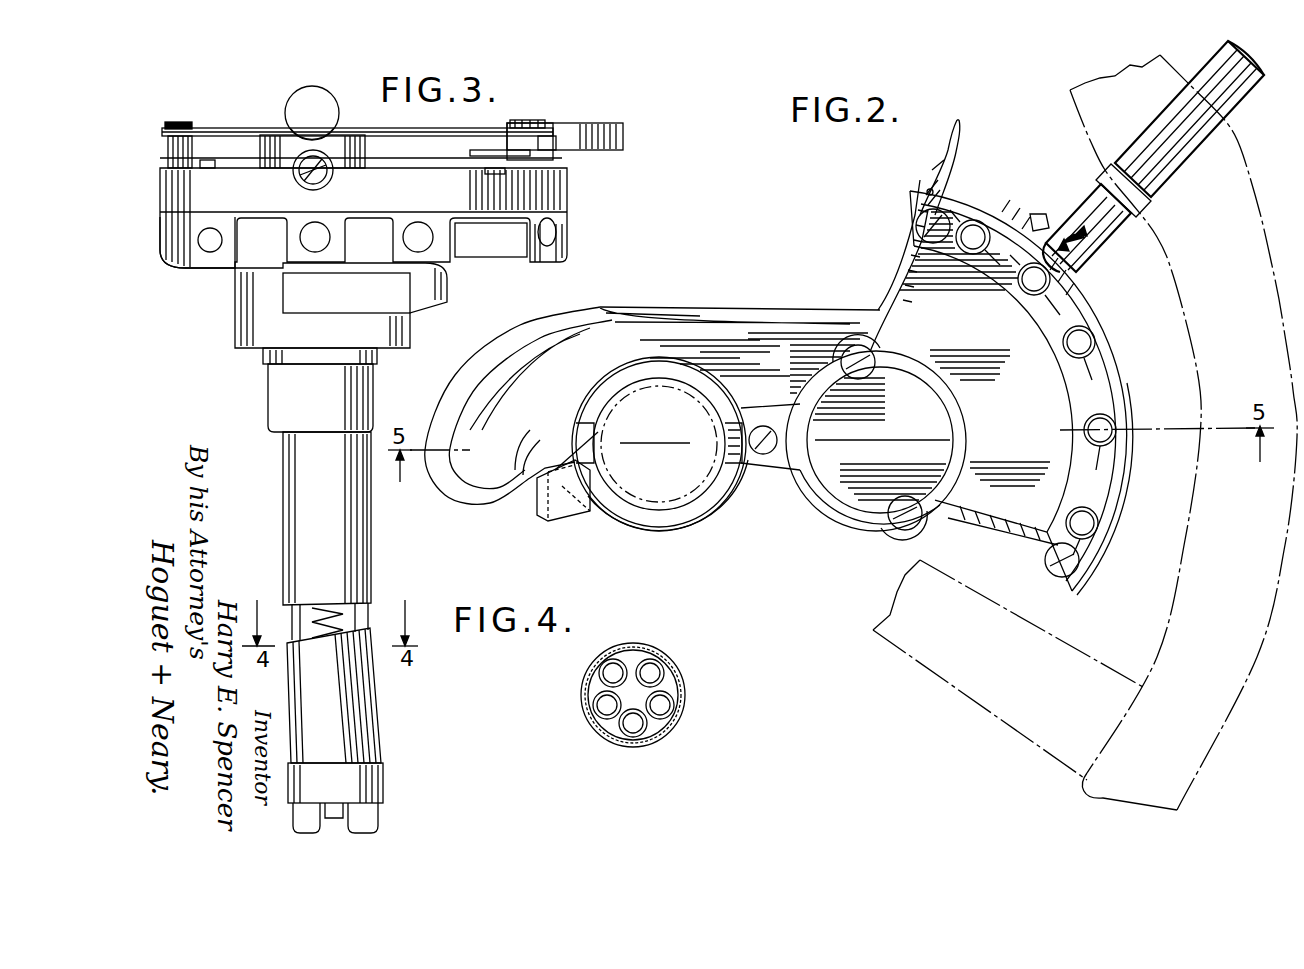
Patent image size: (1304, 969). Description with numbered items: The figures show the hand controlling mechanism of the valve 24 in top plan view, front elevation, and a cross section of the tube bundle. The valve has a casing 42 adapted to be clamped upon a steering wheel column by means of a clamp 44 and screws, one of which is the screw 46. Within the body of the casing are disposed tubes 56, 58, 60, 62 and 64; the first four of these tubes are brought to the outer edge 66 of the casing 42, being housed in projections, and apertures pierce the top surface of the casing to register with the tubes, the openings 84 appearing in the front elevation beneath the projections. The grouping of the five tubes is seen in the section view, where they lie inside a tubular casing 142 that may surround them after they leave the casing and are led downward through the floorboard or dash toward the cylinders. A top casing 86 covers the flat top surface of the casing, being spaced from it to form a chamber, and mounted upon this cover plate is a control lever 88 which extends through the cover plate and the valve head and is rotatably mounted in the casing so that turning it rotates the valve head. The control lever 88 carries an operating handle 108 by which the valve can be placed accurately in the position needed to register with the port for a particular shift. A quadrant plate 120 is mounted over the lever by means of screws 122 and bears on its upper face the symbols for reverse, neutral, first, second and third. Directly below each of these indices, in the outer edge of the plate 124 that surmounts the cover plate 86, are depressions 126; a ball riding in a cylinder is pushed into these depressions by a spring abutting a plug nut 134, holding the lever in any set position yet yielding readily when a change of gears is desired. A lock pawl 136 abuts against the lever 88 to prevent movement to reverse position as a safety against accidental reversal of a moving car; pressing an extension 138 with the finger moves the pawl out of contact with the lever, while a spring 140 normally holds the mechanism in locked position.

In FIG. 3, the valve 24 is at (382, 218).
In FIG. 3, the casing 42 is at (447, 274).
In FIG. 2, the casing 42 is at (712, 322).
In FIG. 2, the clamp 44 is at (690, 514).
In FIG. 2, the screw 46 is at (568, 514).
In FIG. 4, the tube 56 is at (606, 708).
In FIG. 4, the tube 58 is at (632, 726).
In FIG. 4, the tube 60 is at (611, 664).
In FIG. 4, the tube 62 is at (664, 712).
In FIG. 4, the tube 64 is at (654, 667).
In FIG. 3, the outer edge 66 is at (569, 213).
In FIG. 3, the holes 84 is at (552, 238).
In FIG. 3, the top casing 86 is at (207, 196).
In FIG. 2, the control lever 88 is at (1113, 230).
In FIG. 3, the operating handle 108 is at (312, 93).
In FIG. 2, the operating handle 108 is at (1230, 120).
In FIG. 3, the quadrant plate 120 is at (487, 126).
In FIG. 2, the quadrant plate 120 is at (997, 502).
In FIG. 3, the screw 122 is at (173, 122).
In FIG. 2, the screw 122 is at (945, 214).
In FIG. 3, the plate 124 is at (387, 164).
In FIG. 2, the plate 124 is at (1131, 385).
In FIG. 3, the depression 126 is at (213, 166).
In FIG. 2, the depression 126 is at (1113, 324).
In FIG. 3, the plug nut 134 is at (297, 158).
In FIG. 3, the lock pawl 136 is at (550, 140).
In FIG. 2, the lock pawl 136 is at (1043, 216).
In FIG. 3, the extension 138 is at (623, 128).
In FIG. 2, the extension 138 is at (951, 146).
In FIG. 2, the spring 140 is at (475, 481).
In FIG. 3, the tubular casing 142 is at (366, 546).
In FIG. 4, the tubular casing 142 is at (687, 690).